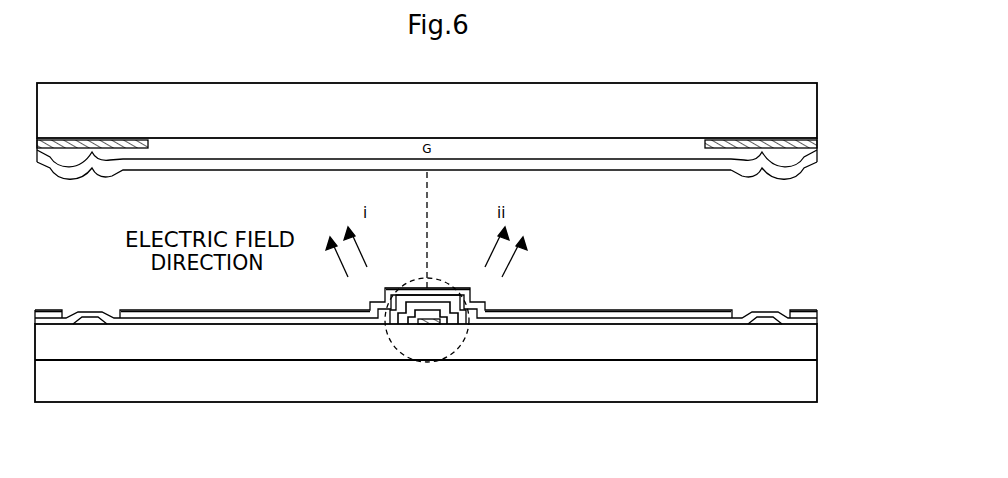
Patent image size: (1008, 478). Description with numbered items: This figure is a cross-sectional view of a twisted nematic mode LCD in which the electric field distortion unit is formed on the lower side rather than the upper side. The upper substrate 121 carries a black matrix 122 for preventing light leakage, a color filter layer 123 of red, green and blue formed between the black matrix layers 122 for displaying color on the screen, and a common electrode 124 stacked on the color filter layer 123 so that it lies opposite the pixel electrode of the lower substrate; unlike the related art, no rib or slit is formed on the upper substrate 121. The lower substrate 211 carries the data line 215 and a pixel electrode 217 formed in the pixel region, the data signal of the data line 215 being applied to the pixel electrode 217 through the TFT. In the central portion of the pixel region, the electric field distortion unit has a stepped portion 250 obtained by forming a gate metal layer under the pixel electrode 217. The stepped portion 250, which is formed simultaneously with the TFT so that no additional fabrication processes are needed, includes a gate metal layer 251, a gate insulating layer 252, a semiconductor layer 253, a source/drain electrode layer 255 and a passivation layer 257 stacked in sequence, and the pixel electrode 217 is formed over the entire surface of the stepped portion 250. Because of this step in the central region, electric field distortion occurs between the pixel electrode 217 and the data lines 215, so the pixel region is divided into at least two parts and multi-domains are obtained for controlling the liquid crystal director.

The upper substrate 121 is at (812, 107).
The black matrix 122 is at (817, 143).
The color filter layer 123 is at (792, 150).
The common electrode 124 is at (806, 163).
The lower substrate 211 is at (800, 382).
The data line 215 is at (92, 325).
The pixel electrode 217 is at (503, 312).
The stepped portion 250 is at (390, 343).
The gate metal layer 251 is at (425, 324).
The gate insulating layer 252 is at (435, 324).
The semiconductor layer 253 is at (458, 325).
The source/drain electrode layer 255 is at (414, 288).
The passivation layer 257 is at (205, 324).